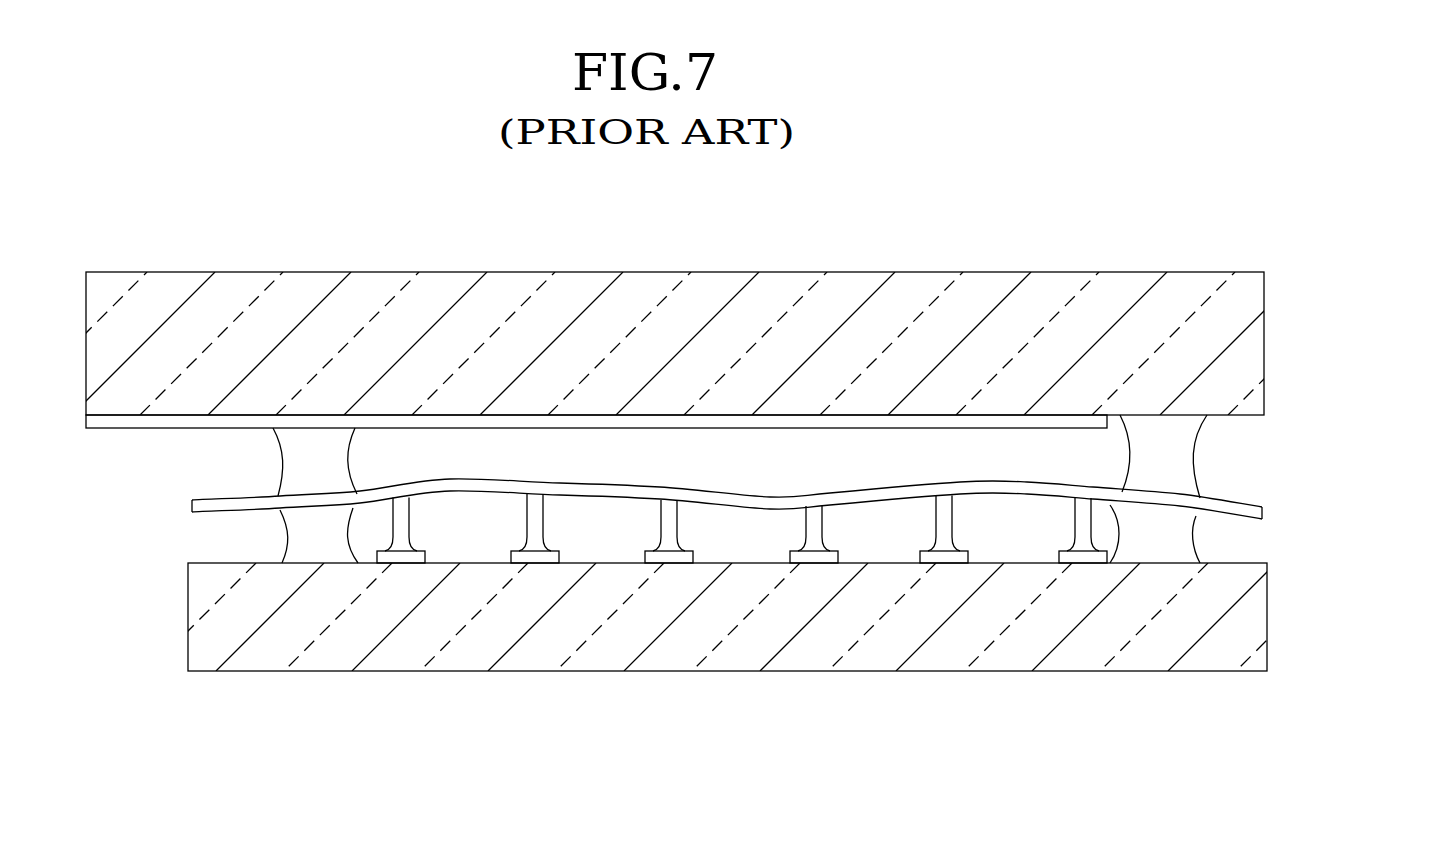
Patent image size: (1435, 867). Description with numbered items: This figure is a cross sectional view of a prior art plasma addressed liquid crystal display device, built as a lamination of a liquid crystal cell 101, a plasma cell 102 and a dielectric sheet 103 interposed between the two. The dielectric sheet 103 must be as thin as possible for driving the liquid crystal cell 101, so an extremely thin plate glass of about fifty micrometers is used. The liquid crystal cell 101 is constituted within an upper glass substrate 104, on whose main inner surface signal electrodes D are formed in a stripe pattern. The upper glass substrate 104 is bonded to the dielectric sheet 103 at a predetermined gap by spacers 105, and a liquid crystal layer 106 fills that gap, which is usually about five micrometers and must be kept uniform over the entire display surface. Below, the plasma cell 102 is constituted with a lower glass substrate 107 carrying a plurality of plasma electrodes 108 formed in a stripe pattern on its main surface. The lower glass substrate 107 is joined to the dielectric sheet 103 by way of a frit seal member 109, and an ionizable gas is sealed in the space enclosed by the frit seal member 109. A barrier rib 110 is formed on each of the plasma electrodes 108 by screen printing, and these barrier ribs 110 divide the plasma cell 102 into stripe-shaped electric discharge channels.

The liquid crystal cell 101 is at (687, 339).
The plasma cell 102 is at (757, 651).
The dielectric sheet 103 is at (1263, 513).
The upper glass substrate 104 is at (753, 307).
The spacers 105 is at (298, 455).
The liquid crystal layer 106 is at (518, 445).
The lower glass substrate 107 is at (890, 648).
The plasma electrodes 108 is at (535, 563).
The frit seal member 109 is at (1198, 538).
The barrier rib 110 is at (677, 520).
The signal electrodes D is at (126, 420).